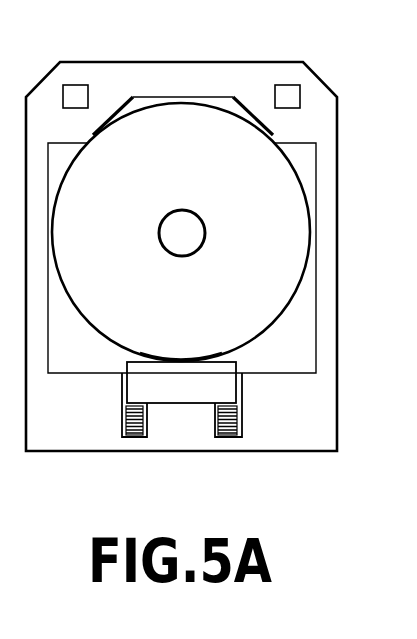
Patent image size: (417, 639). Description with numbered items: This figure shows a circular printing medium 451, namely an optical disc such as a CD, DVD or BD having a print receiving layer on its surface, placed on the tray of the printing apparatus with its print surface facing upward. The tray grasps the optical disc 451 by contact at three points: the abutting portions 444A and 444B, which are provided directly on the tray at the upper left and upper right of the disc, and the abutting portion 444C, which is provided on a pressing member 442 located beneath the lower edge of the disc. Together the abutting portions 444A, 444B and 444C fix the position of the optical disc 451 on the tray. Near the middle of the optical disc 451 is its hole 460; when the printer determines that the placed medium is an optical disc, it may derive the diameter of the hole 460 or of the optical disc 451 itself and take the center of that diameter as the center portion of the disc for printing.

The abutting portion 444A is at (126, 117).
The abutting portion 444B is at (263, 132).
The abutting portion 444C is at (185, 360).
The circular printing medium 451 is at (181, 125).
The hole 460 is at (183, 252).
The pressing member 442 is at (180, 395).